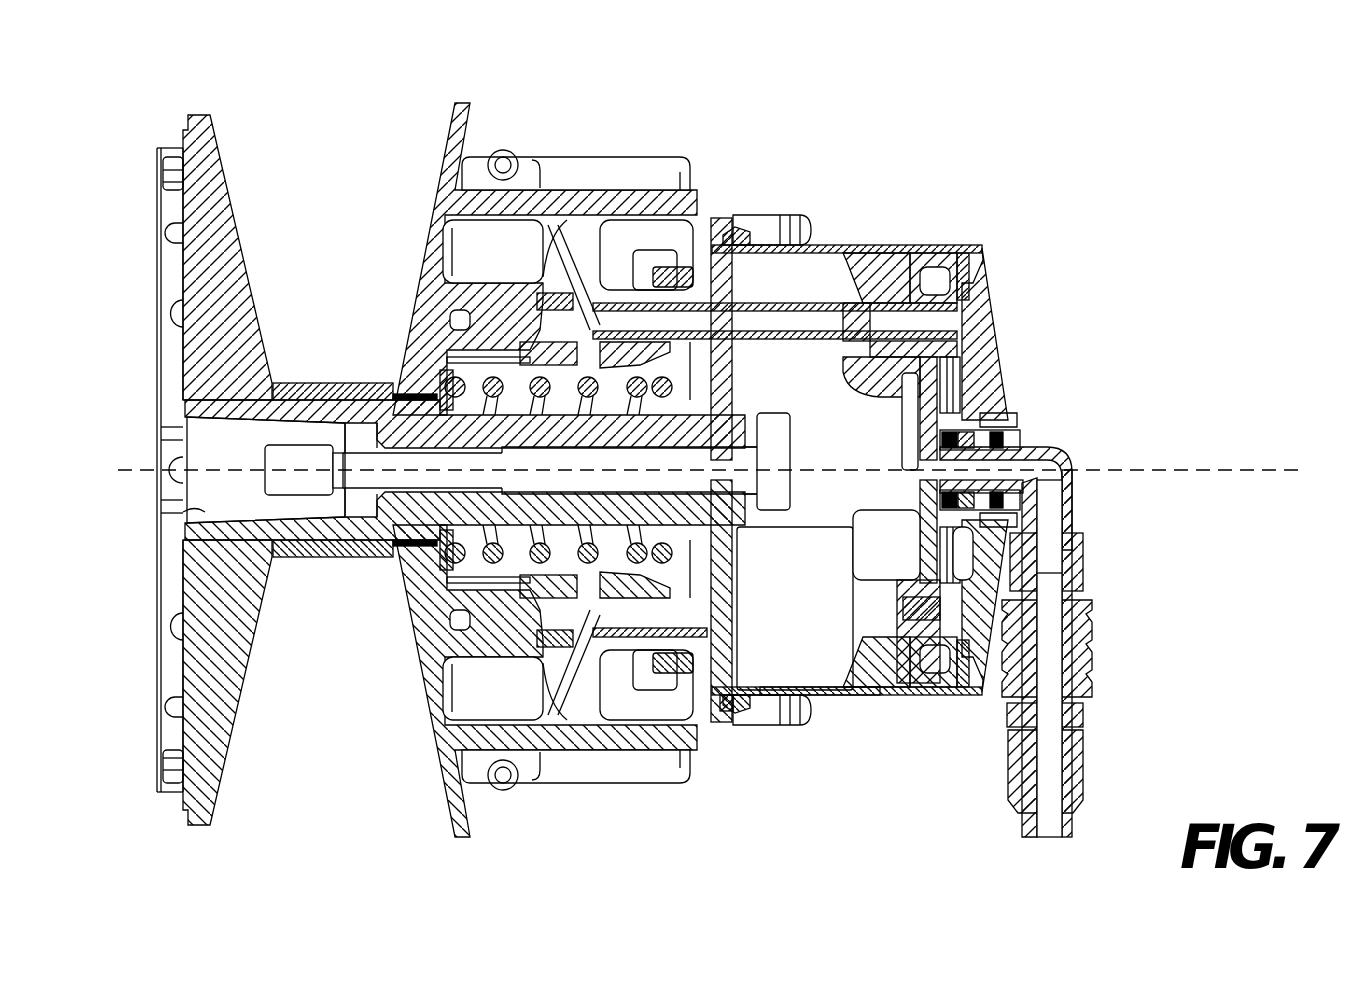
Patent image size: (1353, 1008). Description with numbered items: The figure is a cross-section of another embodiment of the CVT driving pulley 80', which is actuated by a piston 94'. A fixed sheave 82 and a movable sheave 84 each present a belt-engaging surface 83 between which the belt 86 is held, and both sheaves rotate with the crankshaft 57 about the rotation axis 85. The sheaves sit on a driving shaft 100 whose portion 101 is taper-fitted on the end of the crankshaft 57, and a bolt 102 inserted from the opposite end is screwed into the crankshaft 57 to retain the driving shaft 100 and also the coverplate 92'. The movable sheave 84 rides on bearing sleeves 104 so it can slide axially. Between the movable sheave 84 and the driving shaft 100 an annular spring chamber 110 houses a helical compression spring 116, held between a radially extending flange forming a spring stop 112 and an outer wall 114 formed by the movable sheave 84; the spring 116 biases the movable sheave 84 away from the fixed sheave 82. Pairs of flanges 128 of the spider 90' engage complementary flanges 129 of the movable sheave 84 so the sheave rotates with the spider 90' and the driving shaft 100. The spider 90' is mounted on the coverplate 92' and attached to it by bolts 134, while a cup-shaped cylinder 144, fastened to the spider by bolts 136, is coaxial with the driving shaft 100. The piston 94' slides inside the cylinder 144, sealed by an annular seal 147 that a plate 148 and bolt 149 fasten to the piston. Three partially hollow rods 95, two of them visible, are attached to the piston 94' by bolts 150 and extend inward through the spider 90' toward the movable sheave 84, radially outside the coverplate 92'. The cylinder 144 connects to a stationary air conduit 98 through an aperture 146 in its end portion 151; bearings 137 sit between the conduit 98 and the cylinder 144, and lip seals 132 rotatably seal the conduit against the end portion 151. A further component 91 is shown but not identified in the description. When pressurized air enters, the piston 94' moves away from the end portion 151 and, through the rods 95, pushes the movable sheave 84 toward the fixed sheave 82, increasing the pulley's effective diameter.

The driving pulley 80' is at (1185, 174).
The fixed sheave 82 is at (178, 243).
The belt-engaging surface 83 is at (225, 145).
The movable sheave 84 is at (459, 103).
The rotation axis 85 is at (118, 466).
The belt 86 is at (335, 380).
The crankshaft 57 is at (200, 512).
The spider 90' is at (566, 412).
The shoe block 91 is at (680, 730).
The coverplate 92' is at (733, 412).
The piston 94' is at (847, 428).
The partially hollow rods 95 is at (665, 300).
The air conduit 98 is at (1043, 520).
The driving shaft 100 is at (205, 528).
The portion of the driving shaft 101 is at (240, 410).
The bolt 102 is at (773, 437).
The bearing sleeves 104 is at (787, 510).
The annular spring chamber 110 is at (470, 605).
The spring stop 112 is at (475, 580).
The outer wall 114 is at (650, 727).
The helical compression spring 116 is at (485, 650).
The pairs of flanges 128 is at (590, 165).
The complementary flanges 129 is at (530, 170).
The lip seals 132 is at (950, 433).
The bolts 134 is at (730, 703).
The bolts 136 is at (807, 243).
The bearings 137 is at (1000, 432).
The cup-shaped cylinder 144 is at (800, 700).
The aperture 146 is at (1025, 439).
The annular seal 147 is at (922, 257).
The plate 148 is at (947, 258).
The bolt 149 is at (927, 687).
The bolts 150 is at (1070, 557).
The end portion 151 is at (990, 330).